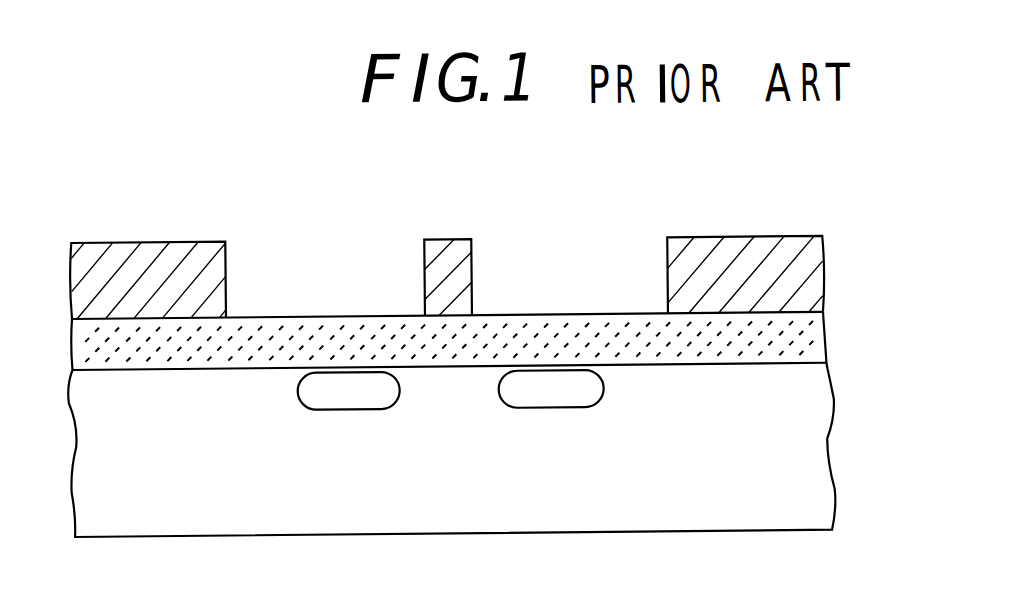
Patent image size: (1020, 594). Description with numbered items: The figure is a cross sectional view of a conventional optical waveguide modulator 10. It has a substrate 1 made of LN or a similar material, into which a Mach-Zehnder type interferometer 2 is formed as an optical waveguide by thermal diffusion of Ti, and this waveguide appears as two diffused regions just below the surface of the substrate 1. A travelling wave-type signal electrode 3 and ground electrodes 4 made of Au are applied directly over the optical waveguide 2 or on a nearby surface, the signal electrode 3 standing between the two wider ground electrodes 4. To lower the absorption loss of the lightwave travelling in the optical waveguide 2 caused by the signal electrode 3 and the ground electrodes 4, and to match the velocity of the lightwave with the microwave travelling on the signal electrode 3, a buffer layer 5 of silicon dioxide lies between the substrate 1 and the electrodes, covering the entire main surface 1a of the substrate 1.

The substrate 1 is at (742, 484).
The main surface 1a is at (762, 369).
The Mach-Zehnder type interferometer 2 is at (362, 392).
The travelling wave-type signal electrode 3 is at (463, 261).
The ground electrodes 4 is at (165, 250).
The buffer layer 5 is at (268, 332).
The optical waveguide modulator 10 is at (625, 238).